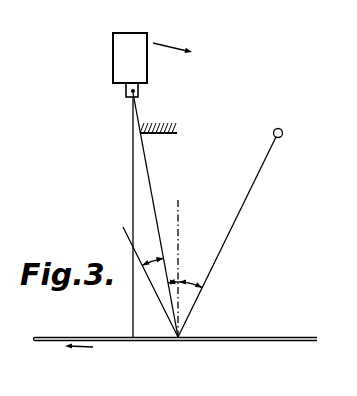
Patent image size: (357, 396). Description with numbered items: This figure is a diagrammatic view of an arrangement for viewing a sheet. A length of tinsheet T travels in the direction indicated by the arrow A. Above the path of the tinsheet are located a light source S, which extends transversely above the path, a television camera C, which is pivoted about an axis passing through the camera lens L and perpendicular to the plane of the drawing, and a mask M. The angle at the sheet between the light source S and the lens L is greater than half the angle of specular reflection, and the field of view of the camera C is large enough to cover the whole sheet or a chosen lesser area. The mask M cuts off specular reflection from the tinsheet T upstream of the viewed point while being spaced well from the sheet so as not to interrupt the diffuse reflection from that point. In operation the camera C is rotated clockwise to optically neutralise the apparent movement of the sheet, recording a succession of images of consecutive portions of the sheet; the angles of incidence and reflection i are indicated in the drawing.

The television camera C is at (113, 70).
The camera lens L is at (123, 95).
The mask M is at (179, 130).
The light source S is at (274, 131).
The length of tinsheet T is at (252, 337).
The arrow A is at (90, 348).
The angle of incidence i is at (168, 283).